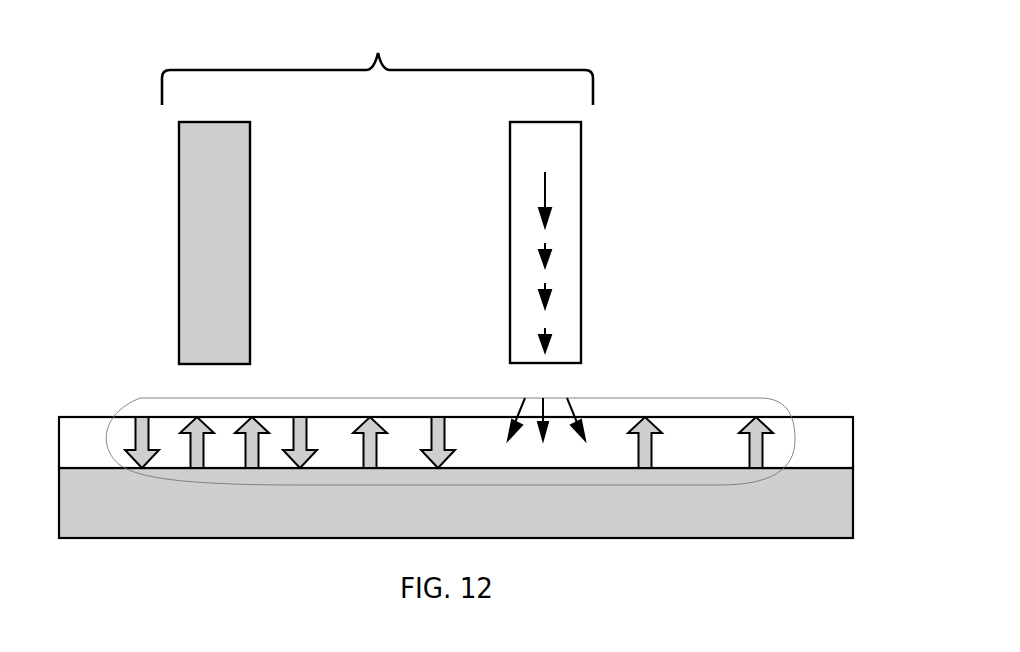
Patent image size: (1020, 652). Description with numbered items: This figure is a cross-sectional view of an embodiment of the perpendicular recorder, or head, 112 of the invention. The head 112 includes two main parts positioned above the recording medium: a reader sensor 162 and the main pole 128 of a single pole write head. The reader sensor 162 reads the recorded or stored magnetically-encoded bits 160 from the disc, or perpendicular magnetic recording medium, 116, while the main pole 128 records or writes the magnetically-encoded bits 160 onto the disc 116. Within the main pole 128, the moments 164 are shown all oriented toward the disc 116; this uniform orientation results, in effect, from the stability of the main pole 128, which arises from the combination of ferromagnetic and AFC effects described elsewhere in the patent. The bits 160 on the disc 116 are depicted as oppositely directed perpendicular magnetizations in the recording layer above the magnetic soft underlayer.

The perpendicular recorder 112 is at (438, 70).
The disc 116 is at (452, 436).
The main pole 128 is at (642, 237).
The magnetically-encoded bits 160 is at (126, 406).
The reader sensor 162 is at (250, 311).
The moments 164 is at (572, 296).